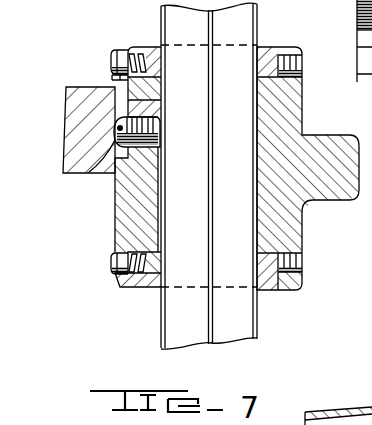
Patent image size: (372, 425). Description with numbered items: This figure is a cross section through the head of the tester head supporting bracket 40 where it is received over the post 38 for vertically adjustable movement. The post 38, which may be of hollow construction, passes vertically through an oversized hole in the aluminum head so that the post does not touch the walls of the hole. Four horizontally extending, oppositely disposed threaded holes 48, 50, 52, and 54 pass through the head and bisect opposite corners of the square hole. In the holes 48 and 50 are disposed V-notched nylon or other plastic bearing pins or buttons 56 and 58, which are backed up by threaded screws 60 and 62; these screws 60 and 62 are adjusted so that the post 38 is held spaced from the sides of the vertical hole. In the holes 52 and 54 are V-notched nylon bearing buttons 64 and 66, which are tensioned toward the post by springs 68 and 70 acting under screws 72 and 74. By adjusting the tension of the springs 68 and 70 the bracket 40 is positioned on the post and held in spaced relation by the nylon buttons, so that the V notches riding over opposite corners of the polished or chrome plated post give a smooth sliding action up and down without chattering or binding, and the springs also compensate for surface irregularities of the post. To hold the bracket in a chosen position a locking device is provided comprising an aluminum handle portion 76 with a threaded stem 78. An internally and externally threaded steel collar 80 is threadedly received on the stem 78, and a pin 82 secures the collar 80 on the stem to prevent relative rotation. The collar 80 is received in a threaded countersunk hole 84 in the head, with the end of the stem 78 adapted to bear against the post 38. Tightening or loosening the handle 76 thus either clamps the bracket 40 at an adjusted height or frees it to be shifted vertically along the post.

The post 38 is at (225, 343).
The tester head supporting bracket 40 is at (358, 50).
The threaded hole 48 is at (303, 60).
The threaded hole 50 is at (302, 273).
The threaded hole 52 is at (137, 49).
The threaded hole 54 is at (137, 286).
The bearing button 56 is at (272, 50).
The bearing button 58 is at (270, 288).
The threaded screw 60 is at (300, 72).
The threaded screw 62 is at (302, 263).
The bearing button 64 is at (155, 47).
The bearing button 66 is at (155, 288).
The spring 68 is at (122, 50).
The spring 70 is at (122, 283).
The screw 72 is at (112, 63).
The screw 74 is at (110, 262).
The handle portion 76 is at (65, 103).
The threaded stem 78 is at (113, 174).
The collar 80 is at (128, 172).
The pin 82 is at (118, 130).
The threaded countersunk hole 84 is at (124, 192).